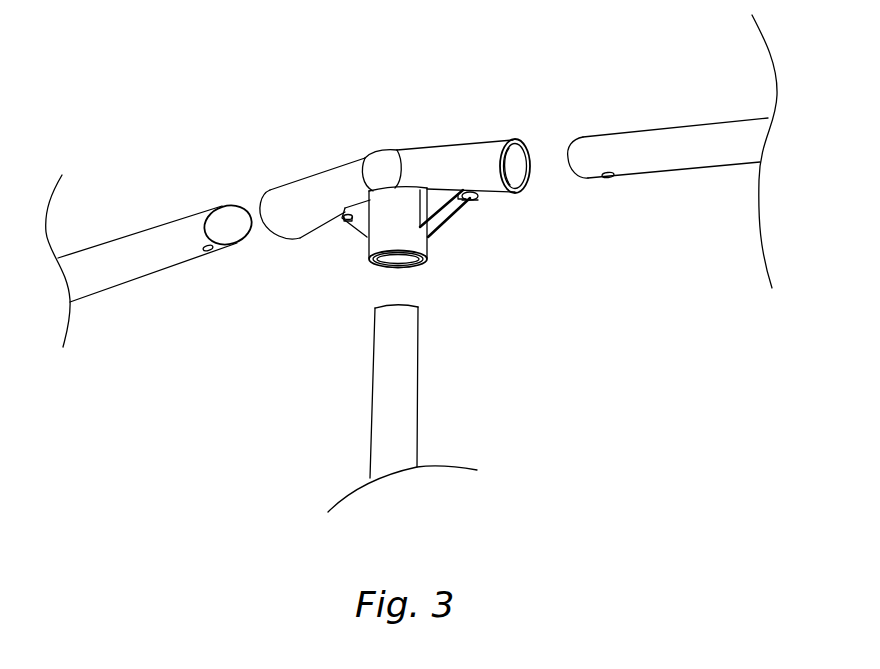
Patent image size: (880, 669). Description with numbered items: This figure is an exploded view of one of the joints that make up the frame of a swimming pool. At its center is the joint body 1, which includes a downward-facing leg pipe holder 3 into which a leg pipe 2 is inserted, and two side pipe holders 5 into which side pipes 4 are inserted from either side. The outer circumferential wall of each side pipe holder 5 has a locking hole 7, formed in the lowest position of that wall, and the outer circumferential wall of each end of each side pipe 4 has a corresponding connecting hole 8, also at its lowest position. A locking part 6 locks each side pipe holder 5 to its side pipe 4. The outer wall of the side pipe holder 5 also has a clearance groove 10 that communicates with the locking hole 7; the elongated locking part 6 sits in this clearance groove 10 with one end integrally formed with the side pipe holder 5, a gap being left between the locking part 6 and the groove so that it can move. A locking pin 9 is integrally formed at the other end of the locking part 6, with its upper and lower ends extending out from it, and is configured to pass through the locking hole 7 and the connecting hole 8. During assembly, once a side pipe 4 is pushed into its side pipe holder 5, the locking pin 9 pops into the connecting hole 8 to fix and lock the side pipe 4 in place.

The joint body 1 is at (380, 175).
The leg pipe 2 is at (385, 383).
The leg pipe holder 3 is at (388, 228).
The side pipe 4 is at (155, 235).
The side pipe holder 5 is at (302, 205).
The locking part 6 is at (462, 195).
The locking hole 7 is at (485, 195).
The connecting hole 8 is at (608, 177).
The locking pin 9 is at (468, 198).
The clearance groove 10 is at (460, 190).